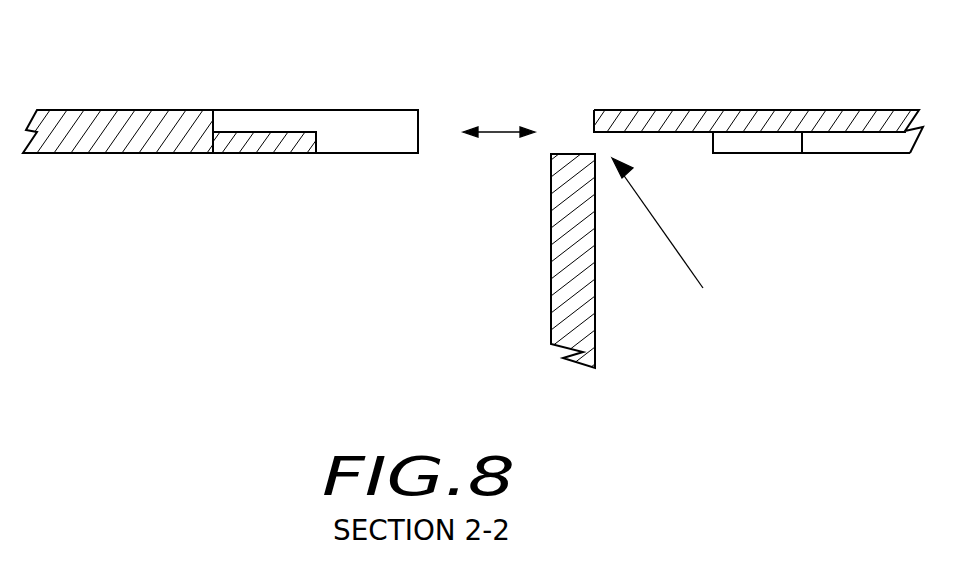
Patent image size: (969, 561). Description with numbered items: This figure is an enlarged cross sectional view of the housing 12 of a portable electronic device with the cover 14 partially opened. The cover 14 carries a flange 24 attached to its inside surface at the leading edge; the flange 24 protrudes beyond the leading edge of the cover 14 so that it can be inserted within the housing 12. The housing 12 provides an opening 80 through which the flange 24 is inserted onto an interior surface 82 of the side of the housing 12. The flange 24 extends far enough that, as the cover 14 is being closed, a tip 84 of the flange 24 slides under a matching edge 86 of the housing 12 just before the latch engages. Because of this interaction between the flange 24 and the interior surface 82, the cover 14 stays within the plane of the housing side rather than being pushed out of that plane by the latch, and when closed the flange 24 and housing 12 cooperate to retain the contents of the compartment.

The housing 12 is at (743, 117).
The cover 14 is at (128, 130).
The flange 24 is at (260, 153).
The opening 80 is at (672, 237).
The interior surface 82 is at (662, 132).
The tip 84 is at (316, 143).
The matching edge 86 is at (593, 122).